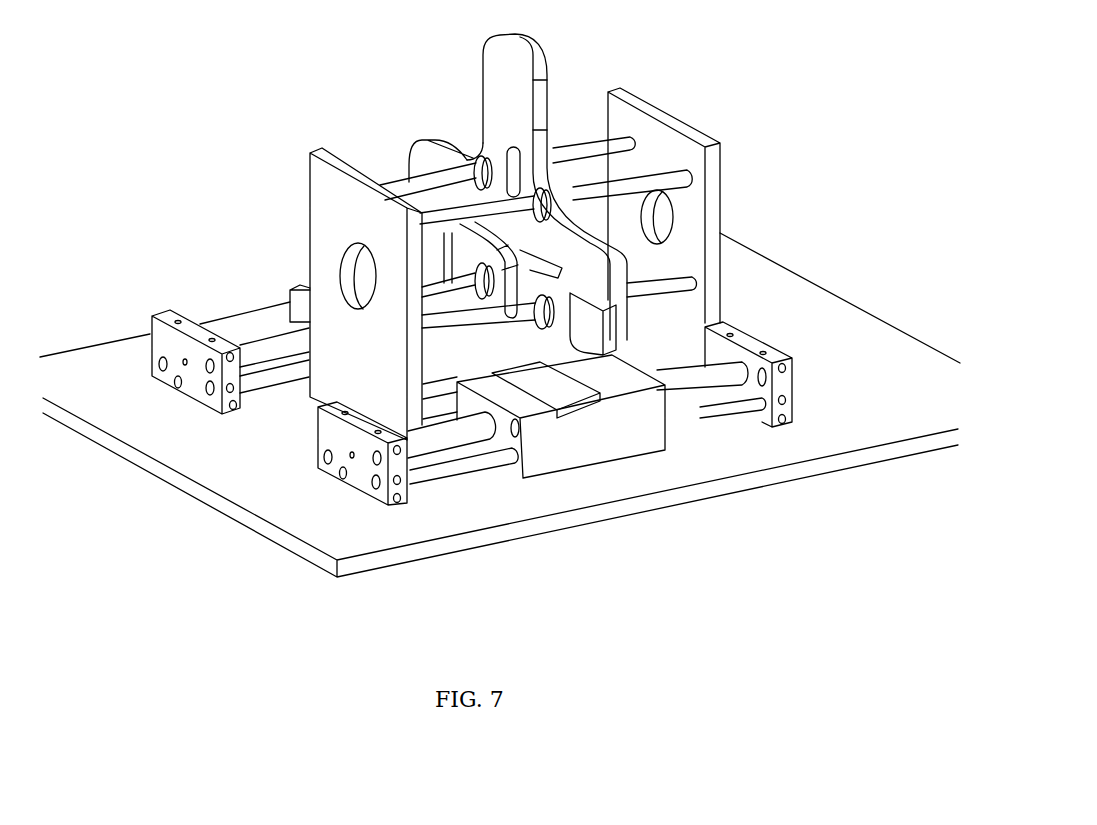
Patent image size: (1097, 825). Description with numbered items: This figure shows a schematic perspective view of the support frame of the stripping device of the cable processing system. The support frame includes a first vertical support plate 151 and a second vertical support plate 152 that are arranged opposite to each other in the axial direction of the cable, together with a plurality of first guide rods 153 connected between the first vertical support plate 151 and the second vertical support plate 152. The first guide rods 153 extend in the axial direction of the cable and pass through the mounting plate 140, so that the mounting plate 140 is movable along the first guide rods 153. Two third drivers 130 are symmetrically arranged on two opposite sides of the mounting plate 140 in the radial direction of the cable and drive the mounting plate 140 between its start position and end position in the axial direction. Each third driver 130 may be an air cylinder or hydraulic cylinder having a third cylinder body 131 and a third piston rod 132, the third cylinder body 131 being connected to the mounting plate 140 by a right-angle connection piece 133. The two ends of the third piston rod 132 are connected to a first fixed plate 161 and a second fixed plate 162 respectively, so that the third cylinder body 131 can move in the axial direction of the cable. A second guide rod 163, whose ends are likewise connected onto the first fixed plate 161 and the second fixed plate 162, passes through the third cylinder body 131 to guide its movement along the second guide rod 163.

The third driver 130 is at (297, 303).
The third cylinder body 131 is at (588, 445).
The third piston rod 132 is at (270, 340).
The right-angle connection piece 133 is at (585, 320).
The mounting plate 140 is at (494, 92).
The first vertical support plate 151 is at (326, 152).
The second vertical support plate 152 is at (660, 112).
The first guide rod 153 is at (437, 183).
The first fixed plate 161 is at (160, 352).
The second fixed plate 162 is at (745, 347).
The second guide rod 163 is at (483, 462).